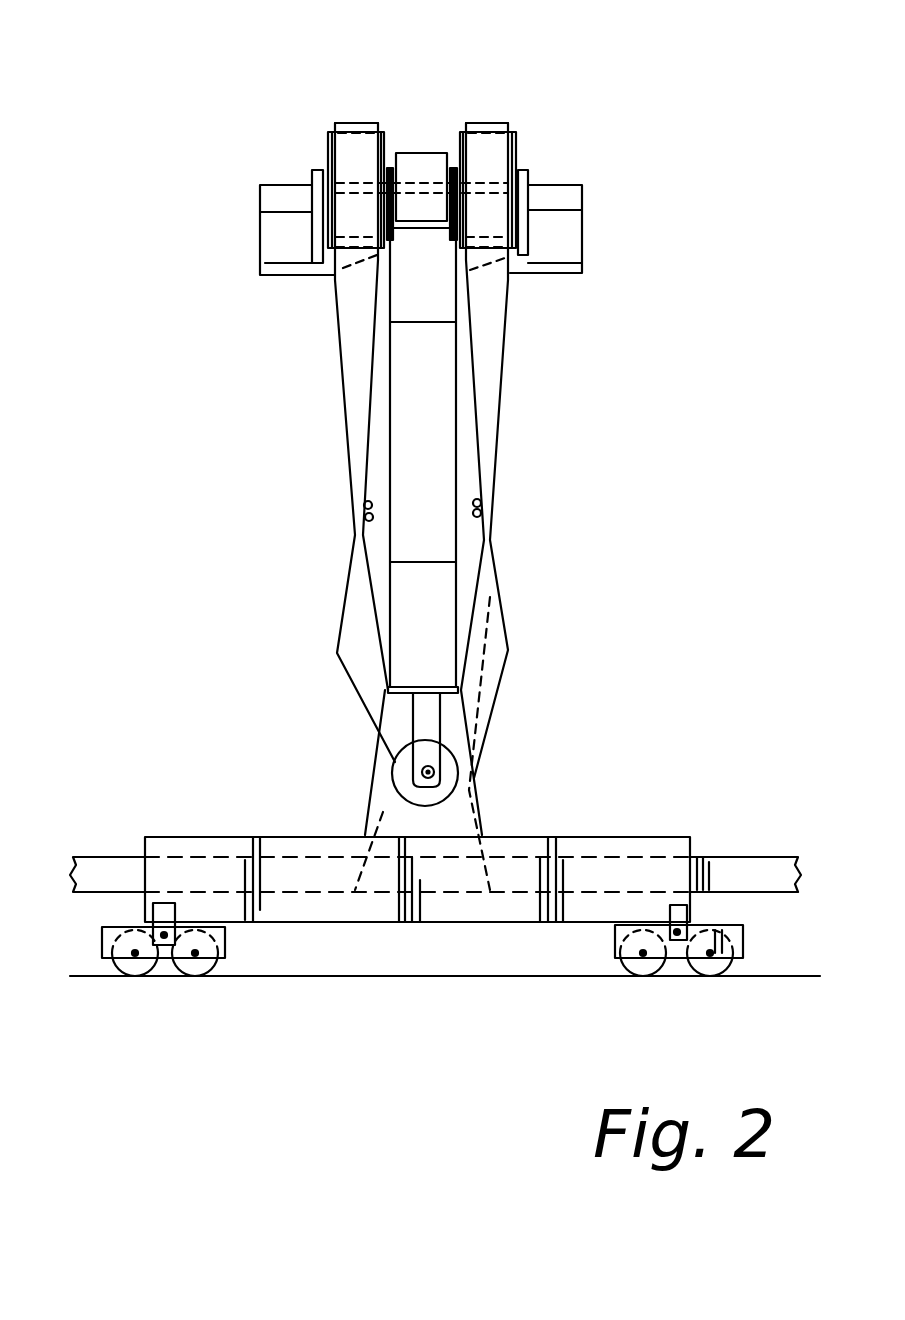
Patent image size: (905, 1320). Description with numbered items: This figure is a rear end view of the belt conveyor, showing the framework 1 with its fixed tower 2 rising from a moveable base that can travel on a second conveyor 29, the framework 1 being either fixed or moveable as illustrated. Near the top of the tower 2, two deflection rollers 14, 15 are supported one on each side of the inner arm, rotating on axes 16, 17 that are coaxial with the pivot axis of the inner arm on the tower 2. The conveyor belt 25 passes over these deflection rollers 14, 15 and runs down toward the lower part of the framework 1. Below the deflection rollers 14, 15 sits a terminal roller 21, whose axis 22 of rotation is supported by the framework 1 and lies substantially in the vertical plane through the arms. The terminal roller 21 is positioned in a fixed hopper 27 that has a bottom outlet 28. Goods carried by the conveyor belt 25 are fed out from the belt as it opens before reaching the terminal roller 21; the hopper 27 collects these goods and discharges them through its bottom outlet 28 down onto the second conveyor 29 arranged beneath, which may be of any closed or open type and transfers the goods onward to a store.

The framework 1 is at (437, 620).
The fixed tower 2 is at (428, 422).
The deflection roller 14 is at (328, 152).
The deflection roller 15 is at (515, 147).
The axis 16 is at (312, 186).
The axis 17 is at (528, 182).
The terminal roller 21 is at (457, 795).
The axis 22 is at (431, 768).
The conveyor belt 25 is at (338, 123).
The fixed hopper 27 is at (472, 833).
The bottom outlet 28 is at (442, 872).
The second conveyor 29 is at (748, 872).